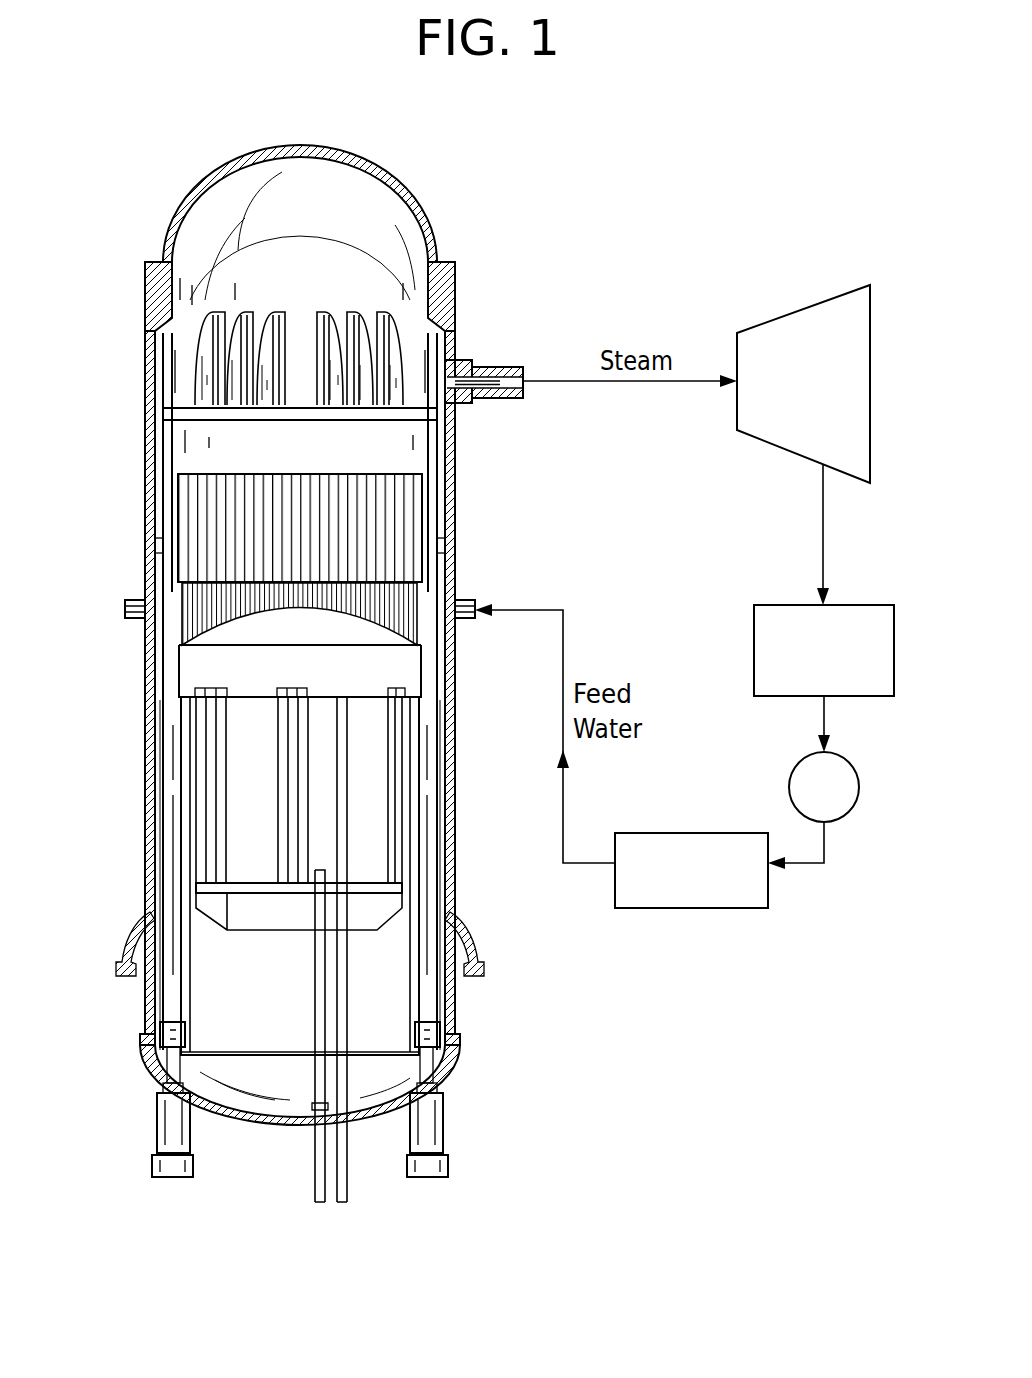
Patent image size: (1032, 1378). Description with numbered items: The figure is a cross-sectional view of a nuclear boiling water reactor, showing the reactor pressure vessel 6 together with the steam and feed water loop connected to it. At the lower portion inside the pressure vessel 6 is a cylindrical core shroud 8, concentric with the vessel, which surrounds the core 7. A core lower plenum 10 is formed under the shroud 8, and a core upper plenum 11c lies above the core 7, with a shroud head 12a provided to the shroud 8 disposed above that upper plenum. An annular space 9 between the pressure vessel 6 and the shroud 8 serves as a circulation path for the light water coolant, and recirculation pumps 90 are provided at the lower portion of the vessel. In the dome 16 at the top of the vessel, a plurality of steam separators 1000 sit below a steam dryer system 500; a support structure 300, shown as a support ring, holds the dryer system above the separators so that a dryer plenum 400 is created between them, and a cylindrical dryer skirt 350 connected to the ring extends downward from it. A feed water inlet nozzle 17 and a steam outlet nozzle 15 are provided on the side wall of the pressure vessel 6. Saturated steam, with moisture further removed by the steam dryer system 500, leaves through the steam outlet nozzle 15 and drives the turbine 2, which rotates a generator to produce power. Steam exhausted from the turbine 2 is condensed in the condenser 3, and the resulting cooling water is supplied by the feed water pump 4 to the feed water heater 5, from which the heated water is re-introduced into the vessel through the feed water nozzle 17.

The reactor pressure vessel 6 is at (148, 797).
The dome 16 is at (410, 198).
The steam outlet nozzle 15 is at (500, 363).
The feed water inlet nozzle 17 is at (465, 598).
The support structure 300 is at (163, 408).
The dryer skirt 350 is at (172, 440).
The dryer plenum 400 is at (190, 473).
The steam dryer system 500 is at (367, 343).
The steam separators 1000 is at (393, 507).
The shroud head 12a is at (390, 637).
The core upper plenum 11c is at (405, 677).
The core 7 is at (282, 807).
The core shroud 8 is at (413, 865).
The annular space 9 is at (173, 883).
The core lower plenum 10 is at (387, 993).
The recirculation pumps 90 is at (443, 1125).
The turbine 2 is at (766, 447).
The condenser 3 is at (754, 625).
The feed water pump 4 is at (856, 800).
The feed water heater 5 is at (690, 830).